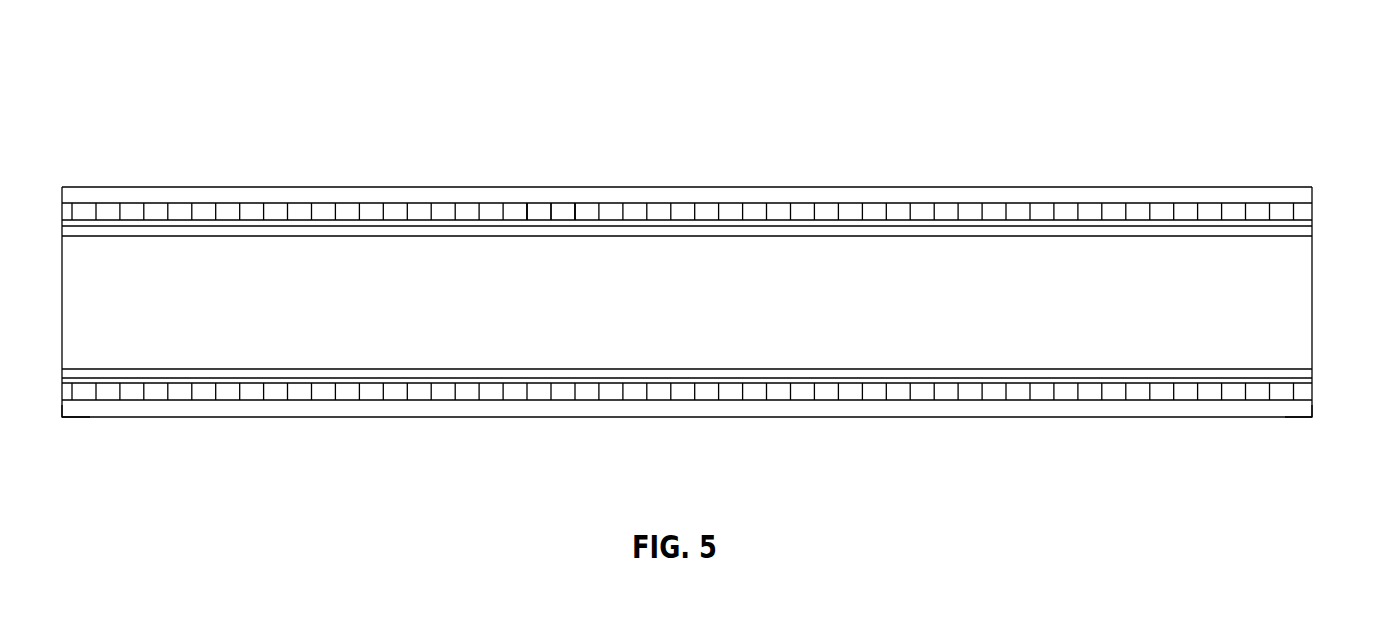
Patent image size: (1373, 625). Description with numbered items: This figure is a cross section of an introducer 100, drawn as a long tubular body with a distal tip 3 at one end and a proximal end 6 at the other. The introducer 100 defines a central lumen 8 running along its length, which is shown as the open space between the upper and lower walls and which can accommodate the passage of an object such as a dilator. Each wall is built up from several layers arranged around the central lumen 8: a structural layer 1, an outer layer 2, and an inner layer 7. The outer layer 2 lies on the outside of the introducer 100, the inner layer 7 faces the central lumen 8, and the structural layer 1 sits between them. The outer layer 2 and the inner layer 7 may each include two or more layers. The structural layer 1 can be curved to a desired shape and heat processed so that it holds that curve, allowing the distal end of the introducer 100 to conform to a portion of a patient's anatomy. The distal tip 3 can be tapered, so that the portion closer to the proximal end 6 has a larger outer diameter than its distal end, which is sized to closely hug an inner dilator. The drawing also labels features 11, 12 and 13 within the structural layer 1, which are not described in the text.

The introducer 100 is at (1168, 62).
The structural layer 1 is at (1307, 212).
The outer layer 2 is at (1123, 195).
The distal tip 3 is at (78, 420).
The proximal end 6 is at (1303, 425).
The inner layer 7 is at (922, 230).
The central lumen 8 is at (1295, 312).
The mesh cells 11 is at (585, 205).
The first mesh wire 12 is at (540, 212).
The second mesh wire 13 is at (567, 210).